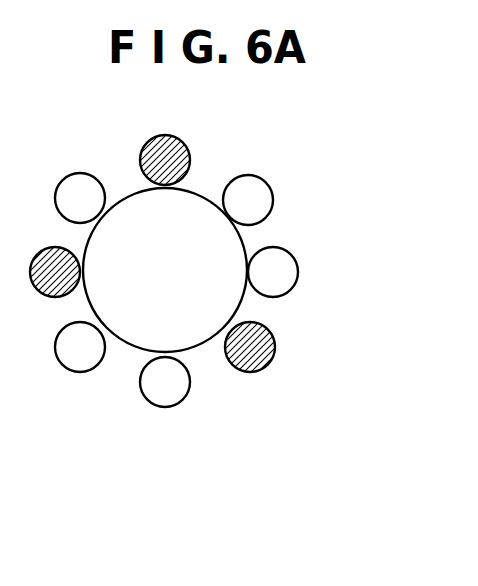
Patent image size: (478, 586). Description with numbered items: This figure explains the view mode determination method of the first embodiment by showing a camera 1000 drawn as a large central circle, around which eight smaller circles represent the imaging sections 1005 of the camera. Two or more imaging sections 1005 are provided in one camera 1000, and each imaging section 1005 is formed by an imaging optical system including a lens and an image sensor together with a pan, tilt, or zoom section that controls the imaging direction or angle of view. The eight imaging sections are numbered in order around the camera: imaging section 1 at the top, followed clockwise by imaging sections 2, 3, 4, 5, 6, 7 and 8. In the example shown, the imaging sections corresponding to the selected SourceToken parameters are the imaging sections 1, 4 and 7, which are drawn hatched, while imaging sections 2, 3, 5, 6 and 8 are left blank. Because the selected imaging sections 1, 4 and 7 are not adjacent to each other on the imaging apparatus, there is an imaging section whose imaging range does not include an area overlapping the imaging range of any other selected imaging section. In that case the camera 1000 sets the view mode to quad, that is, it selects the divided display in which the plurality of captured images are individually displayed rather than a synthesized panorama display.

The camera 1000 is at (247, 302).
The imaging section 1005 is at (274, 197).
The imaging section 1 is at (165, 160).
The imaging section 2 is at (248, 200).
The imaging section 3 is at (273, 272).
The imaging section 4 is at (250, 347).
The imaging section 5 is at (165, 382).
The imaging section 6 is at (80, 347).
The imaging section 7 is at (55, 272).
The imaging section 8 is at (80, 198).